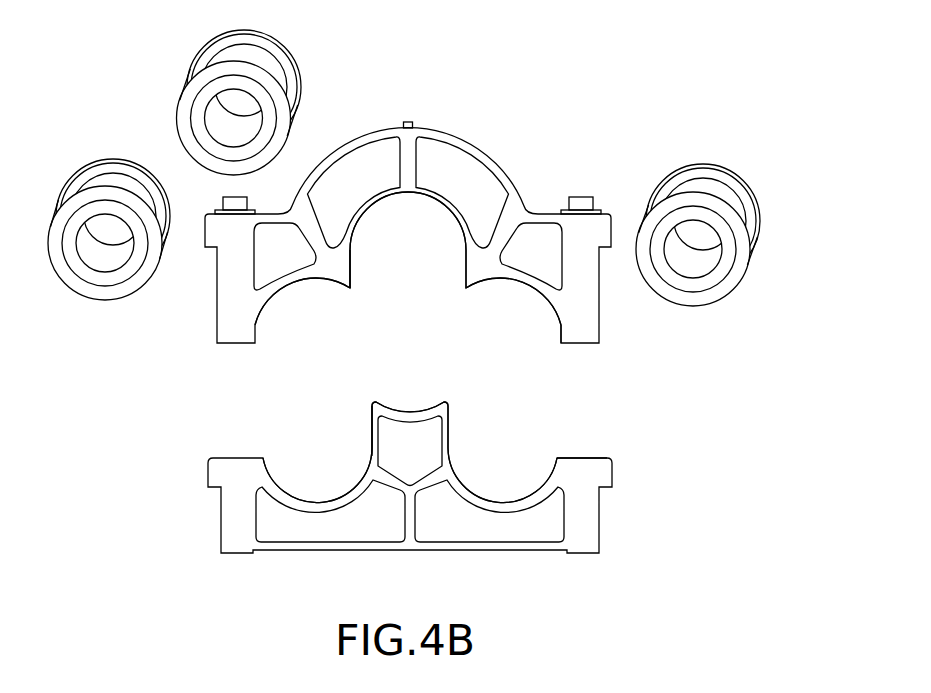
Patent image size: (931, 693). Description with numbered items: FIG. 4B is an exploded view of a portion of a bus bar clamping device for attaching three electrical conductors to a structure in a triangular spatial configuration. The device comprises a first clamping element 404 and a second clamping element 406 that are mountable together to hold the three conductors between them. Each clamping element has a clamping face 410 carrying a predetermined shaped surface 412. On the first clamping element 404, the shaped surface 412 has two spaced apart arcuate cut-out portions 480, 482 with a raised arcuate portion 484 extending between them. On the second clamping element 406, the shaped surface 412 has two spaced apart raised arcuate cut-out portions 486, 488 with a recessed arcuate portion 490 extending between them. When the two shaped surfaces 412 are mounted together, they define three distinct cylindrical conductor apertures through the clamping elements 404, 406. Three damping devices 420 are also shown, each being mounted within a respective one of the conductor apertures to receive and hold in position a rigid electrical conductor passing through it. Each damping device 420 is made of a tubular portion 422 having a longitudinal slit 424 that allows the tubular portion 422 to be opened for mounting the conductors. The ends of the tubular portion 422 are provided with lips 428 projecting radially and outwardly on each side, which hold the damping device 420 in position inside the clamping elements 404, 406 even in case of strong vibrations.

The first clamping element 404 is at (237, 503).
The second clamping element 406 is at (461, 172).
The clamping face 410 is at (369, 300).
The shaped surface 412 is at (560, 324).
The damping device 420 is at (719, 225).
The tubular portion 422 is at (720, 198).
The longitudinal slit 424 is at (117, 172).
The lip 428 is at (675, 297).
The arcuate cut-out portion 480 is at (347, 480).
The arcuate cut-out portion 482 is at (530, 481).
The raised arcuate portion 484 is at (440, 395).
The raised arcuate cut-out portion 486 is at (332, 330).
The raised arcuate cut-out portion 488 is at (540, 327).
The recessed arcuate portion 490 is at (433, 236).